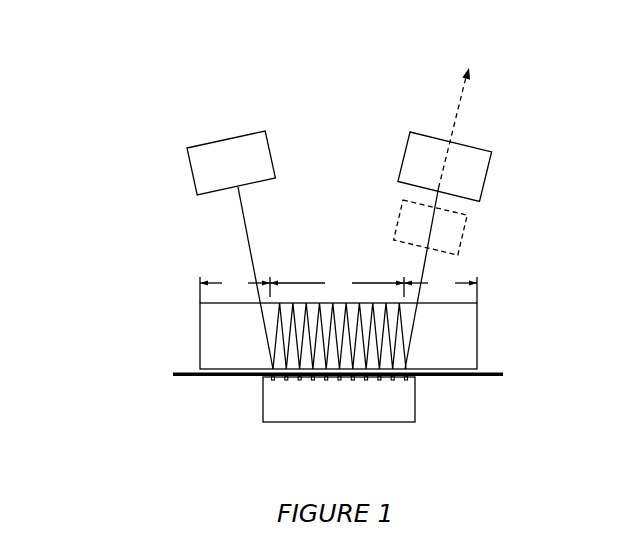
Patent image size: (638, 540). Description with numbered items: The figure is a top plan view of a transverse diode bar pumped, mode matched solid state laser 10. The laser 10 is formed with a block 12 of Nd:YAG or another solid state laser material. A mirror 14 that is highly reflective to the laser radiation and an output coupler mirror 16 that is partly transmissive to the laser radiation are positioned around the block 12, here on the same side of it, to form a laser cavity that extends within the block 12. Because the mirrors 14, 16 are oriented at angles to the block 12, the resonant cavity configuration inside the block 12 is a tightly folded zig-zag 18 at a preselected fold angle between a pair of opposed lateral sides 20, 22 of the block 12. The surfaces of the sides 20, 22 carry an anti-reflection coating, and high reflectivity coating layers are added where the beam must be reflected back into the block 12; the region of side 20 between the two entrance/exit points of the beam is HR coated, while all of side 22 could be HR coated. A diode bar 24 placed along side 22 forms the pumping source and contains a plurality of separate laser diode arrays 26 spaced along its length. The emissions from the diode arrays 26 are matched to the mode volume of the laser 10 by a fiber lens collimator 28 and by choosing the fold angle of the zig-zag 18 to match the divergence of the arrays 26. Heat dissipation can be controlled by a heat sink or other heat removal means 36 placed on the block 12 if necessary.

The solid state laser 10 is at (123, 78).
The block 12 is at (212, 352).
The mirror 14 is at (186, 173).
The output coupler mirror 16 is at (400, 150).
The zig-zag 18 is at (268, 367).
The lateral side 20 is at (461, 306).
The lateral side 22 is at (468, 367).
The diode bar 24 is at (393, 403).
The laser diode arrays 26 is at (273, 382).
The fiber lens collimator 28 is at (490, 370).
The heat removal means 36 is at (468, 222).